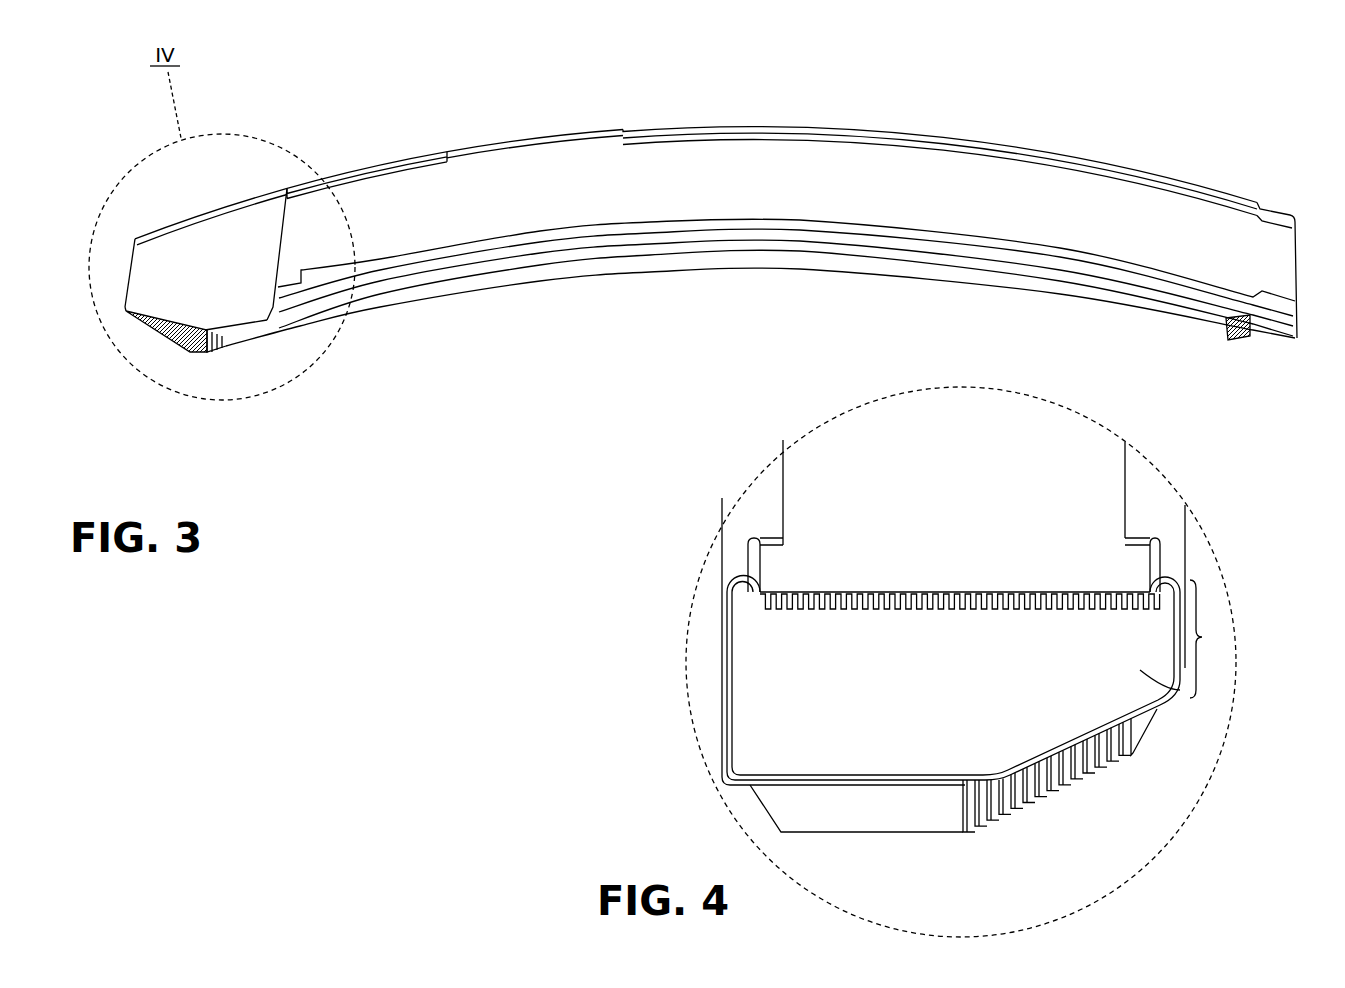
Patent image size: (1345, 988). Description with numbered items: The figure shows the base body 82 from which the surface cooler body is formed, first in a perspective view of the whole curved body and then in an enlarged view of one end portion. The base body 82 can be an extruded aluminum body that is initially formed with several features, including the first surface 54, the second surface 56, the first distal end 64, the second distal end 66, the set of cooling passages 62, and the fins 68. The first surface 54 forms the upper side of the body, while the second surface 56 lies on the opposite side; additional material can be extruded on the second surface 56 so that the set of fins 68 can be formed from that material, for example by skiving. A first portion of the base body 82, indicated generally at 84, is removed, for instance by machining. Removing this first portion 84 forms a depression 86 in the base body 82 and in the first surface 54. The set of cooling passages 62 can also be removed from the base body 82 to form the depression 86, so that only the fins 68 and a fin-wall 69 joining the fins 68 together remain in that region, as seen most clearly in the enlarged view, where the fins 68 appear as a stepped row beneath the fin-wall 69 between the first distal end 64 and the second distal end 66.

In FIG. 3, the first surface 54 is at (763, 167).
In FIG. 4, the first surface 54 is at (1063, 487).
In FIG. 3, the second surface 56 is at (741, 270).
In FIG. 4, the set of cooling passages 62 is at (880, 616).
In FIG. 3, the first distal end 64 is at (137, 327).
In FIG. 4, the first distal end 64 is at (870, 833).
In FIG. 3, the second distal end 66 is at (1297, 335).
In FIG. 3, the fins 68 is at (596, 275).
In FIG. 4, the fins 68 is at (1050, 788).
In FIG. 3, the fin-wall 69 is at (223, 285).
In FIG. 4, the fin-wall 69 is at (1140, 670).
In FIG. 3, the base body 82 is at (548, 180).
In FIG. 4, the base body 82 is at (1080, 542).
In FIG. 4, the first portion 84 is at (1210, 639).
In FIG. 3, the depression 86 is at (200, 250).
In FIG. 4, the depression 86 is at (918, 722).